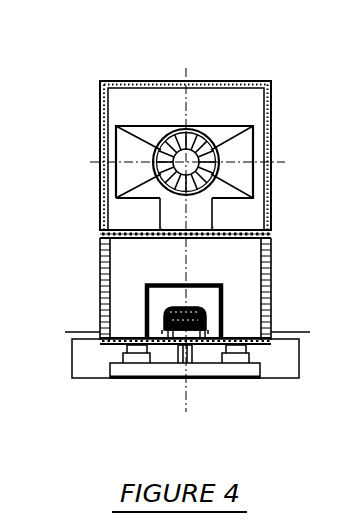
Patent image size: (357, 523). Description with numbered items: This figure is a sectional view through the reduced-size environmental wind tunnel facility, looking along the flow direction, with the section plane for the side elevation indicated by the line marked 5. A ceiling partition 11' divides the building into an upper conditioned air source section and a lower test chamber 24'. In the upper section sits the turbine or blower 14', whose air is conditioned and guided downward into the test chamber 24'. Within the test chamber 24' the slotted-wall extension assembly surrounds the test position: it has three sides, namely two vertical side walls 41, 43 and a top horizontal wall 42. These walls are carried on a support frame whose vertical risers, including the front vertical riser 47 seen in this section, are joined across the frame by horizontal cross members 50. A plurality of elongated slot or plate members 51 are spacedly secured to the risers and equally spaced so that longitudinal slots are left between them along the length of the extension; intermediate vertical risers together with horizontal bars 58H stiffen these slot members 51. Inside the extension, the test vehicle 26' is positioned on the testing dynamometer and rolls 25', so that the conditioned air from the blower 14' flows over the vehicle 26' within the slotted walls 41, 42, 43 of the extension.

The ceiling partition 11' is at (216, 155).
The turbine or blower 14' is at (204, 126).
The horizontal bars 58H is at (173, 275).
The horizontal cross members 50 is at (162, 274).
The vertical side wall 43 is at (143, 284).
The top horizontal wall 42 is at (268, 222).
The test chamber 24' is at (166, 291).
The front vertical riser 47 is at (230, 292).
The vertical side wall 41 is at (225, 317).
The elongated slot or plate members 51 is at (126, 342).
The testing dynamometer and rolls 25' is at (177, 391).
The test vehicle 26' is at (136, 409).
The section line 5- 5 is at (230, 282).